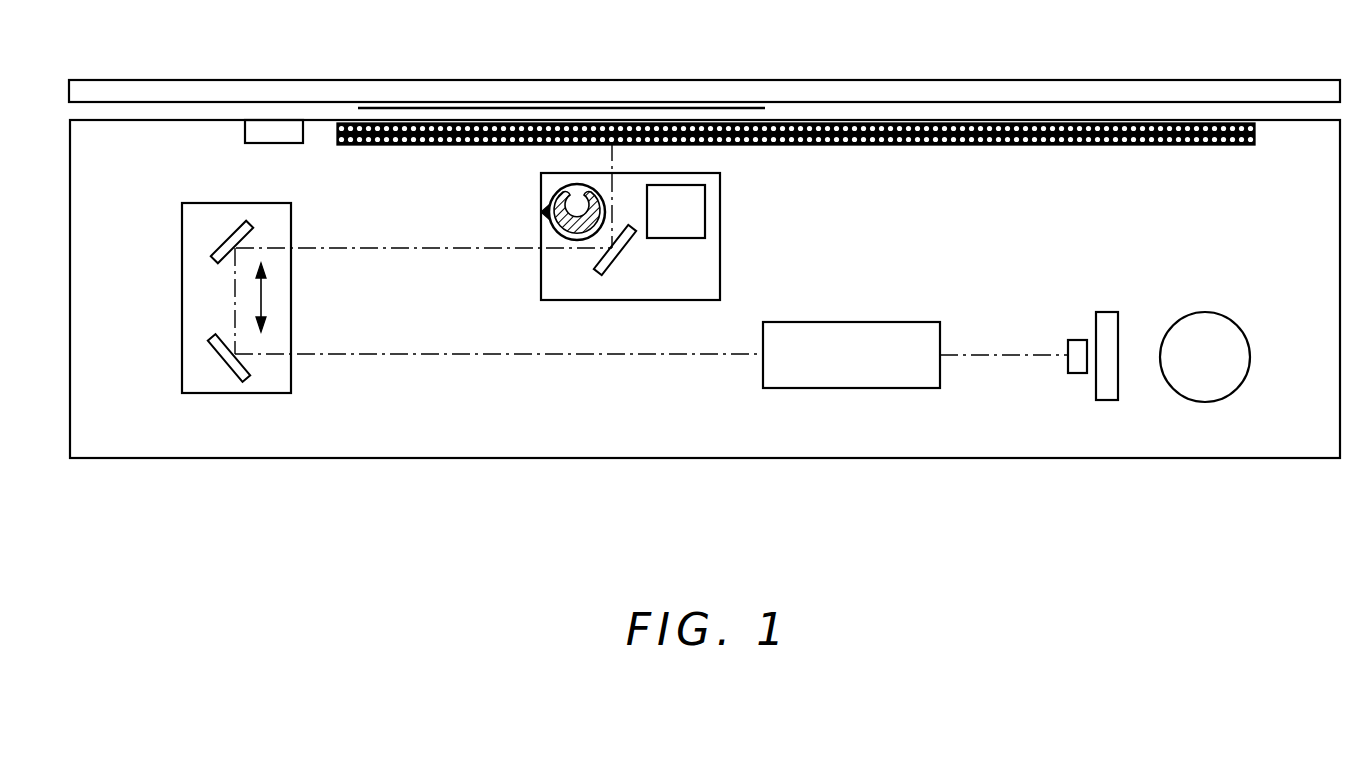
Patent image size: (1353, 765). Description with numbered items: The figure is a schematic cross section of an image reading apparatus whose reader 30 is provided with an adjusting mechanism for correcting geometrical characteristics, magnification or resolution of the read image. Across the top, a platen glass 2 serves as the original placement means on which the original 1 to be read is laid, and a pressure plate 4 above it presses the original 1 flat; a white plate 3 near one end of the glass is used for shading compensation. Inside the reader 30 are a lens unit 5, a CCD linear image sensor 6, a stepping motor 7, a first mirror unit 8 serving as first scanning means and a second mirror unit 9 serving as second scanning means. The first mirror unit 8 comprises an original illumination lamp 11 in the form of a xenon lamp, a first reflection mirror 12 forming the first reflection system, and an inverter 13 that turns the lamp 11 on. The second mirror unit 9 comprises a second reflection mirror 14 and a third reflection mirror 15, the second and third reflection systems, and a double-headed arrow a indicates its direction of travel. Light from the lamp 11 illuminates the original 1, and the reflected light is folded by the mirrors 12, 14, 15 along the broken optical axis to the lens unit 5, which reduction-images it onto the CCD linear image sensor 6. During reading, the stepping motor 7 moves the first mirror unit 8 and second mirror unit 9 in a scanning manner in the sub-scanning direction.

The original 1 is at (588, 108).
The platen glass 2 is at (993, 147).
The white plate 3 is at (252, 140).
The pressure plate 4 is at (1088, 80).
The lens unit 5 is at (866, 330).
The CCD linear image sensor 6 is at (1077, 340).
The stepping motor 7 is at (1207, 322).
The first mirror unit 8 is at (697, 200).
The second mirror unit 9 is at (291, 370).
The original illumination lamp 11 is at (548, 205).
The first reflection mirror 12 is at (615, 268).
The inverter 13 is at (720, 255).
The second reflection mirror 14 is at (222, 250).
The third reflection mirror 15 is at (218, 356).
The reader 30 is at (768, 458).
The carriage movement direction a is at (265, 298).